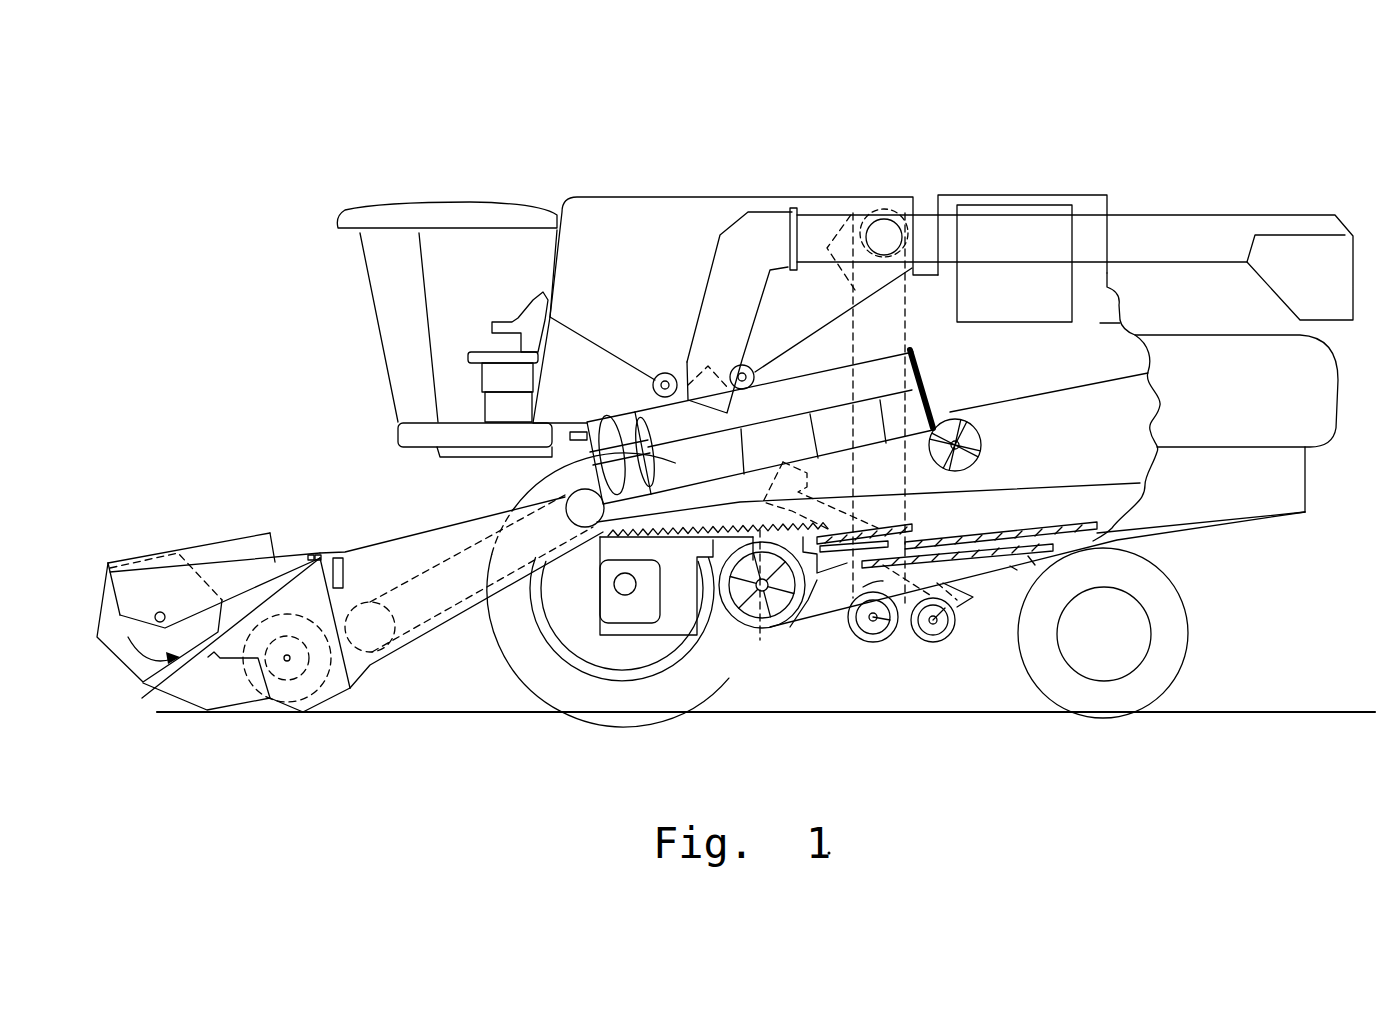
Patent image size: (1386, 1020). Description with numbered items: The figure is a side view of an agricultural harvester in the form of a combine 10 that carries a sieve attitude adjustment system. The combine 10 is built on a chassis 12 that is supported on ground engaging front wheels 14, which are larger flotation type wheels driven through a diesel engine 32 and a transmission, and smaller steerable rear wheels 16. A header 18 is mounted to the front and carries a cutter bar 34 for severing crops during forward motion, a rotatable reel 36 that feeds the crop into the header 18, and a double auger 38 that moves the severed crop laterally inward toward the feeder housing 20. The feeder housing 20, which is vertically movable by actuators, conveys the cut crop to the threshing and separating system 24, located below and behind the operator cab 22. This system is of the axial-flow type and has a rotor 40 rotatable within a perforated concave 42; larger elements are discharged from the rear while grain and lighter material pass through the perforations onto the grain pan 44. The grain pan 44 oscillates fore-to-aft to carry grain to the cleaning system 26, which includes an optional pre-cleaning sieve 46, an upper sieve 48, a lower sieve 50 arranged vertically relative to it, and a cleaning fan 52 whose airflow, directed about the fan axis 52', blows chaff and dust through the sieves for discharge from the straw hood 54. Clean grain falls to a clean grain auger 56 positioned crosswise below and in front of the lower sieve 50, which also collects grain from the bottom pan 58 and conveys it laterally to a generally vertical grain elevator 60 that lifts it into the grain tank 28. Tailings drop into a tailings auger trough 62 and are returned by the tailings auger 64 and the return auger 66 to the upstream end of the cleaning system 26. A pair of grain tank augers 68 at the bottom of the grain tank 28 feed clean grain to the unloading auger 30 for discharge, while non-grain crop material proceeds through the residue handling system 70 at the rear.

The combine 10 is at (438, 178).
The chassis 12 is at (1117, 543).
The front wheels 14 is at (523, 668).
The rear wheels 16 is at (1185, 652).
The header 18 is at (194, 525).
The feeder housing 20 is at (417, 540).
The operator cab 22 is at (373, 304).
The threshing and separating system 24 is at (518, 474).
The cleaning system 26 is at (832, 645).
The grain tank 28 is at (615, 200).
The unloading auger 30 is at (1202, 224).
The diesel engine 32 is at (1002, 207).
The cutter bar 34 is at (222, 712).
The reel 36 is at (100, 612).
The double auger 38 is at (288, 682).
The rotor 40 is at (615, 428).
The concave 42 is at (800, 400).
The grain pan 44 is at (599, 560).
The pre-cleaning sieve 46 is at (910, 532).
The upper sieve 48 is at (1017, 528).
The lower sieve 50 is at (985, 566).
The cleaning fan 52 is at (762, 621).
The fan axis 52' is at (751, 642).
The straw hood 54 is at (1315, 380).
The clean grain auger 56 is at (873, 640).
The bottom pan 58 is at (1035, 565).
The grain elevator 60 is at (907, 322).
The tailings auger trough 62 is at (1017, 570).
The tailings auger 64 is at (933, 640).
The return auger 66 is at (846, 510).
The grain tank augers 68 is at (663, 372).
The residue handling system 70 is at (1282, 532).